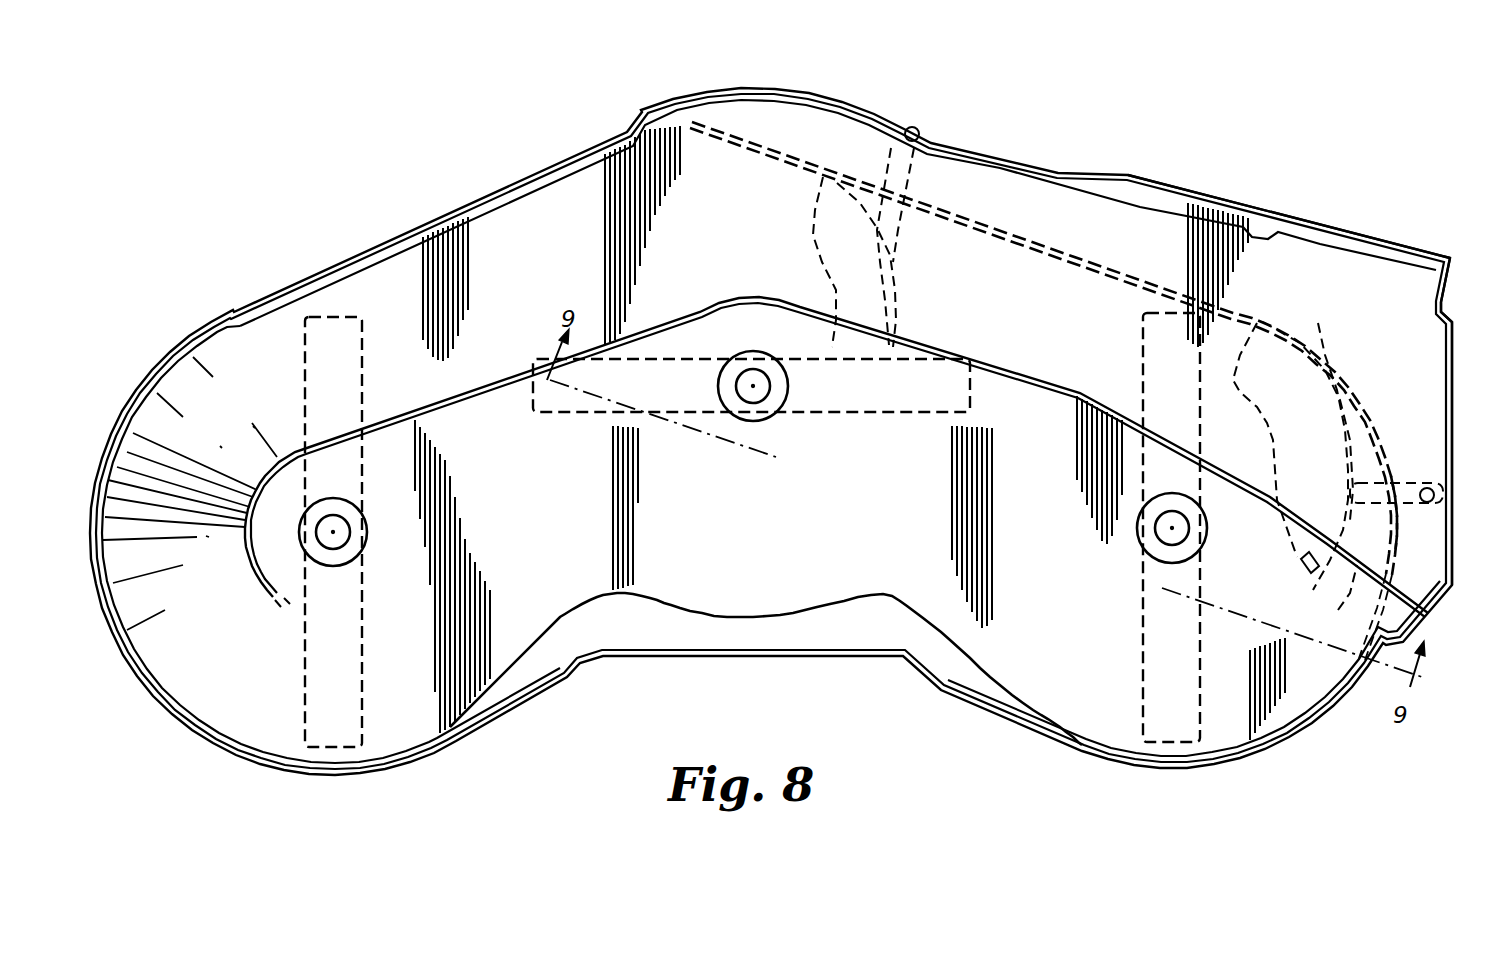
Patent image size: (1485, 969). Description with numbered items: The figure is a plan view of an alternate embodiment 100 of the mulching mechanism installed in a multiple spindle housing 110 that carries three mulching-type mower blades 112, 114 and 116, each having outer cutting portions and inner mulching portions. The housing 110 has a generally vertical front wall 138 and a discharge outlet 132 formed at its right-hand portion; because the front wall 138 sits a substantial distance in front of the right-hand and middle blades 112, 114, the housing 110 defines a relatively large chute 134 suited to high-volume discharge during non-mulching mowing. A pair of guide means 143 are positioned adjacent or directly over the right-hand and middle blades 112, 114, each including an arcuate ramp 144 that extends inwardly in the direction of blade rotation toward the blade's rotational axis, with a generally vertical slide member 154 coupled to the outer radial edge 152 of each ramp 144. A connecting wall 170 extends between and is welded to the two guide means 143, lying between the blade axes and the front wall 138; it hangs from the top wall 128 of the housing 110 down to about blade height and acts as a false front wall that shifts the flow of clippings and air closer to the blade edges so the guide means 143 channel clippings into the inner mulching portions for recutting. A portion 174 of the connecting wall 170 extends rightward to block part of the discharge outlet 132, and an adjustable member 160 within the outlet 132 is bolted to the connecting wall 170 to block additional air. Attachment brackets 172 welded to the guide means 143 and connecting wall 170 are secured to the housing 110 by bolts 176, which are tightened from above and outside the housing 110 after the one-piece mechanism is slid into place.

The alternate embodiment 100 is at (1160, 116).
The multiple spindle housing 110 is at (570, 157).
The mower blade 112 is at (1143, 627).
The mower blade 114 is at (864, 412).
The mower blade 116 is at (363, 610).
The top wall 128 is at (767, 597).
The discharge outlet 132 is at (1443, 350).
The chute 134 is at (503, 240).
The front wall 138 is at (1167, 207).
The guide means 143 is at (898, 270).
The arcuate ramp 144 is at (820, 265).
The outer radial edge 152 is at (897, 290).
The slide member 154 is at (900, 317).
The adjustable member 160 is at (1392, 478).
The connecting wall 170 is at (1090, 260).
The attachment bracket 172 is at (913, 167).
The portion of the connecting wall 174 is at (1328, 596).
The bolt 176 is at (912, 127).